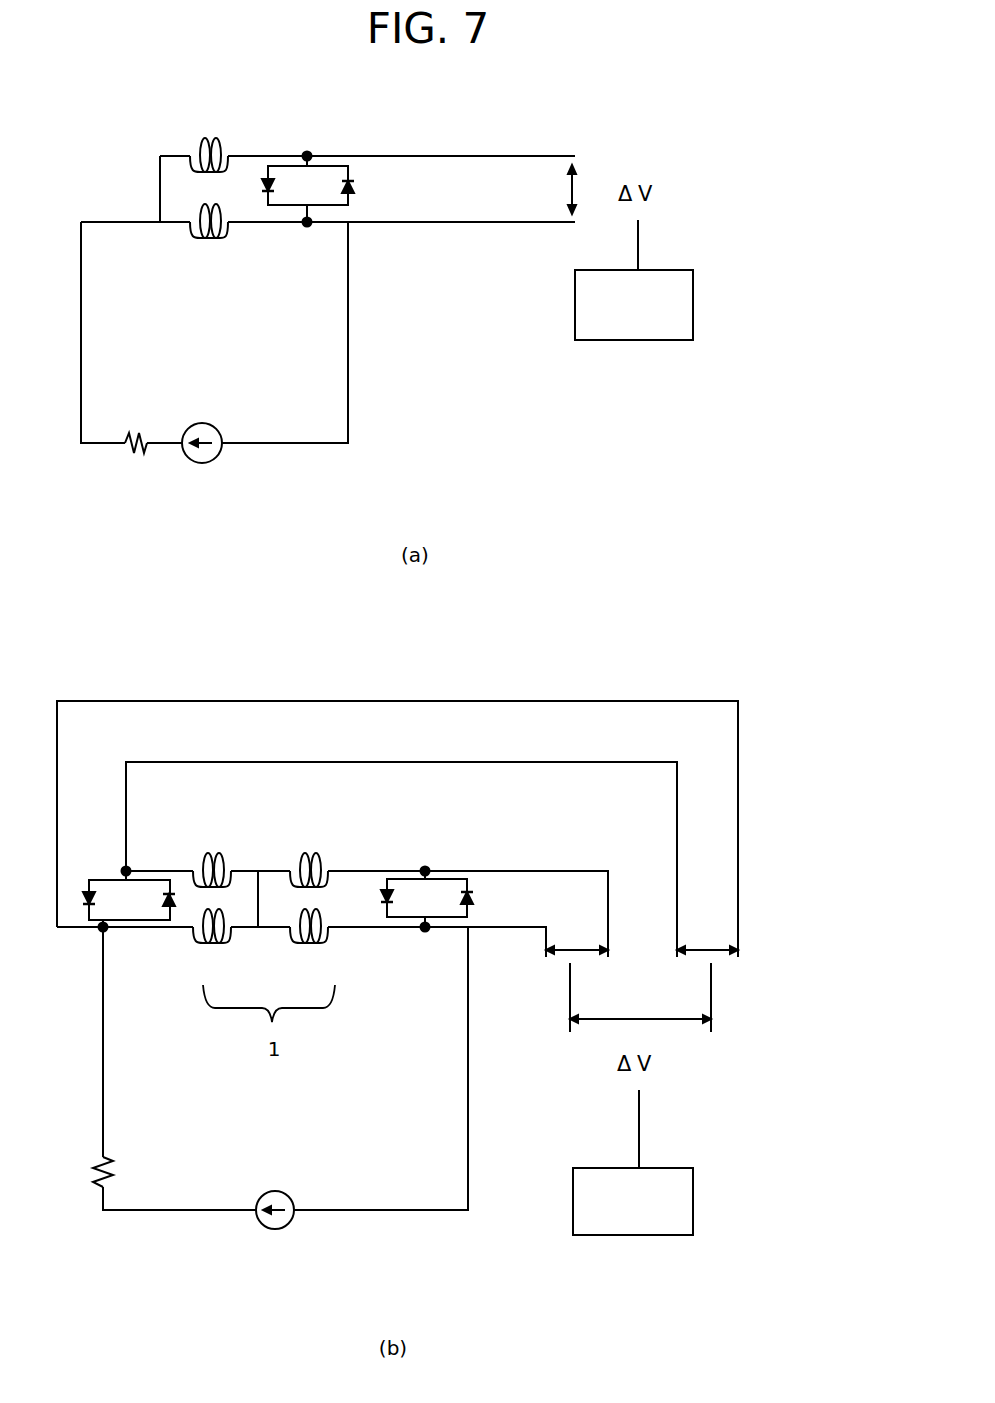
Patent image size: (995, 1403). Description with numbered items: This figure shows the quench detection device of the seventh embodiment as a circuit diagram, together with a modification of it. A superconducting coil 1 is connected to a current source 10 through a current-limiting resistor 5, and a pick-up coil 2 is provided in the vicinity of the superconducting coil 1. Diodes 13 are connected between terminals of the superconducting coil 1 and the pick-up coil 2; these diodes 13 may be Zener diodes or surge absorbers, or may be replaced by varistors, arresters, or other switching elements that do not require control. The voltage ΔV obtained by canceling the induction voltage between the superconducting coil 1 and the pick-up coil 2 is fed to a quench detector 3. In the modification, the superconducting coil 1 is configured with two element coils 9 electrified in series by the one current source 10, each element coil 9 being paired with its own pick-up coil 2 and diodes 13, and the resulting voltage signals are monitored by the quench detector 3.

The superconducting coil 1 is at (203, 244).
The pick-up coil 2 is at (200, 152).
The quench detector 3 is at (693, 309).
The current-limiting resistor 5 is at (133, 455).
The element coils 9 is at (209, 946).
The current source 10 is at (205, 463).
The diodes 13 is at (356, 187).